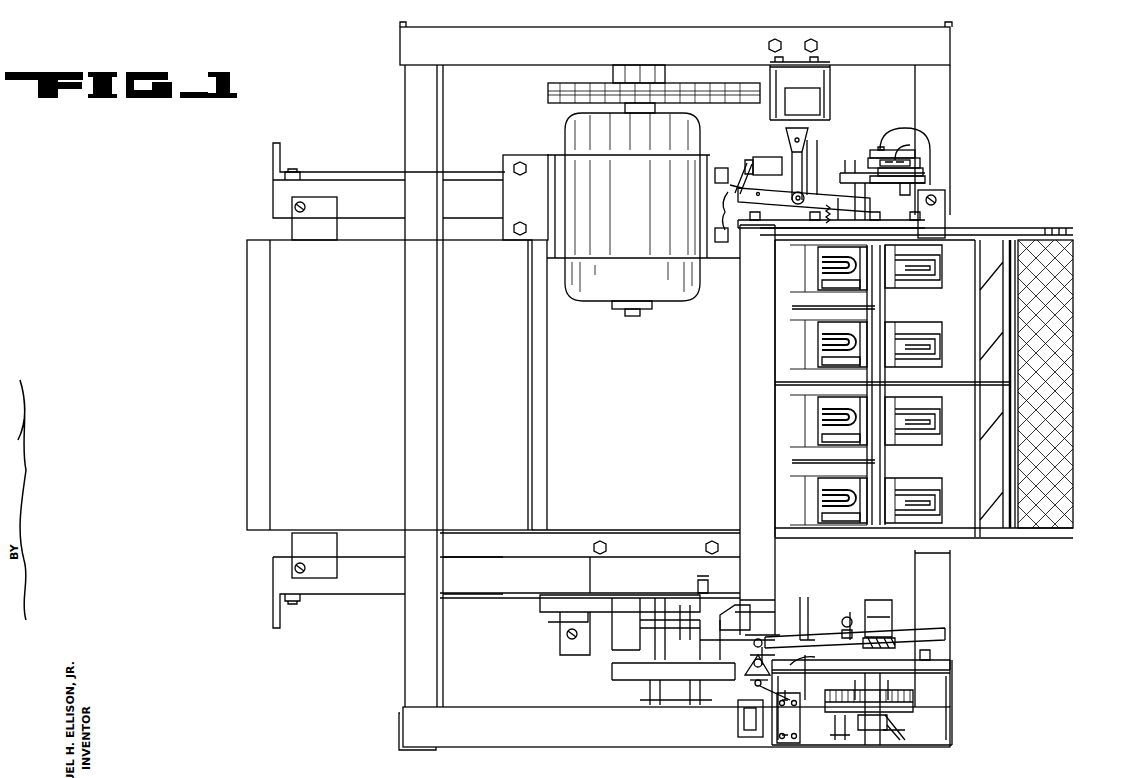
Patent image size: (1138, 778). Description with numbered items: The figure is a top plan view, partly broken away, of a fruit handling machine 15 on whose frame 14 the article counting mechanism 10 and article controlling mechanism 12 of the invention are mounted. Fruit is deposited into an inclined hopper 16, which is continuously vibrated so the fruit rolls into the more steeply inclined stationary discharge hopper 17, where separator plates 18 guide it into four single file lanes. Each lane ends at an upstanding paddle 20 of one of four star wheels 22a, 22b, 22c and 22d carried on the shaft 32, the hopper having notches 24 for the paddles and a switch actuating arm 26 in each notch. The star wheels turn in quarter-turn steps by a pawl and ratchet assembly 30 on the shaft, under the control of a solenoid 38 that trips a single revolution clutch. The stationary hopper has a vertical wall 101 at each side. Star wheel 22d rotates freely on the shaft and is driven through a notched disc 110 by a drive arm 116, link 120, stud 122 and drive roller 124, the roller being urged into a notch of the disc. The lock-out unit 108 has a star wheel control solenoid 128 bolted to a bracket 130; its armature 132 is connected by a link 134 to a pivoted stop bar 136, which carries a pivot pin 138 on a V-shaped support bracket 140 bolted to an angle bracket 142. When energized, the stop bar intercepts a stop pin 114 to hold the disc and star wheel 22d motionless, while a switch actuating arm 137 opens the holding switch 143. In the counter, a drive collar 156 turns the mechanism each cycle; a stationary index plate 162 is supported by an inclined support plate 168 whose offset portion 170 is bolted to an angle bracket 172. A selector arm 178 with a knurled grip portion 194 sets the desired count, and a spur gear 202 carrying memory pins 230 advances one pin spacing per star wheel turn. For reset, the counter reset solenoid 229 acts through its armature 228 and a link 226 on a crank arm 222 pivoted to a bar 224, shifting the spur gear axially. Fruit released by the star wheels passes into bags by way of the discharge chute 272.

The article counting mechanism 10 is at (937, 683).
The article controlling mechanism 12 is at (1006, 218).
The frame 14 is at (575, 27).
The fruit handling machine 15 is at (227, 313).
The inclined hopper 16 is at (617, 397).
The stationary discharge hopper 17 is at (974, 358).
The separator plates 18 is at (800, 310).
The paddle 20 is at (850, 300).
The star wheel 22a is at (905, 492).
The star wheel 22b is at (905, 445).
The star wheel 22c is at (905, 335).
The star wheel 22d is at (905, 290).
The notches 24 is at (925, 290).
The switch actuating arm 26 is at (838, 270).
The pawl and ratchet assembly 30 is at (885, 588).
The shaft 32 is at (890, 154).
The solenoid 38 is at (555, 633).
The vertical wall 101 is at (770, 235).
The lock-out unit 108 is at (838, 180).
The notched disc 110 is at (864, 174).
The stop pin 114 is at (925, 185).
The drive arm 116 is at (905, 148).
The link 120 is at (915, 166).
The stud 122 is at (910, 160).
The drive roller 124 is at (920, 173).
The star wheel control solenoid 128 is at (796, 112).
The bracket 130 is at (787, 40).
The armature 132 is at (807, 103).
The link 134 is at (802, 147).
The stop bar 136 is at (823, 192).
The switch actuating arm 137 is at (733, 188).
The pivot pin 138 is at (760, 192).
The support bracket 140 is at (815, 175).
The angle bracket 142 is at (758, 157).
The holding switch 143 is at (748, 163).
The drive collar 156 is at (897, 640).
The index plate 162 is at (900, 668).
The support plate 168 is at (767, 665).
The offset portion 170 is at (765, 670).
The angle bracket 172 is at (752, 740).
The selector arm 178 is at (900, 725).
The knurled grip portion 194 is at (875, 735).
The spur gear 202 is at (830, 735).
The crank arm 222 is at (810, 635).
The bar 224 is at (838, 665).
The link 226 is at (748, 688).
The armature 228 is at (755, 705).
The counter reset solenoid 229 is at (752, 722).
The memory pins 230 is at (920, 695).
The discharge chute 272 is at (1048, 400).